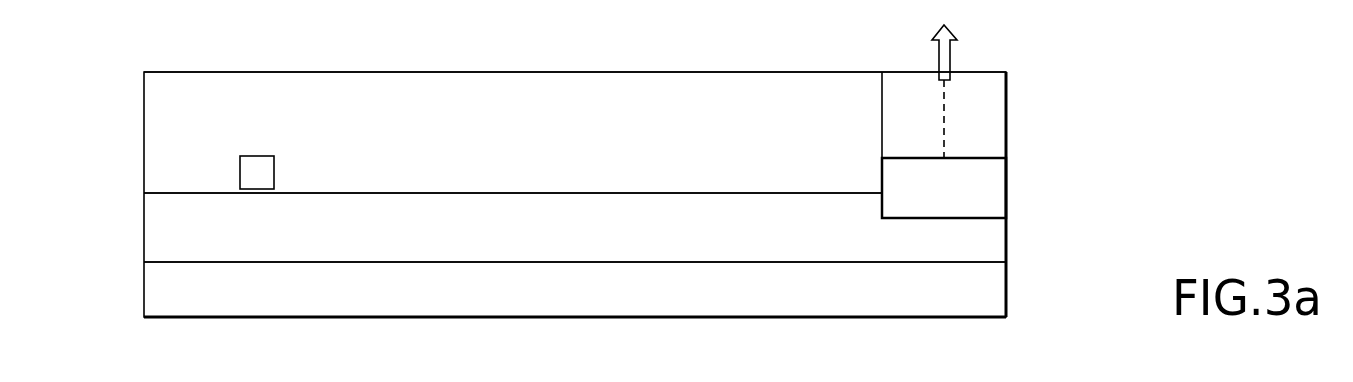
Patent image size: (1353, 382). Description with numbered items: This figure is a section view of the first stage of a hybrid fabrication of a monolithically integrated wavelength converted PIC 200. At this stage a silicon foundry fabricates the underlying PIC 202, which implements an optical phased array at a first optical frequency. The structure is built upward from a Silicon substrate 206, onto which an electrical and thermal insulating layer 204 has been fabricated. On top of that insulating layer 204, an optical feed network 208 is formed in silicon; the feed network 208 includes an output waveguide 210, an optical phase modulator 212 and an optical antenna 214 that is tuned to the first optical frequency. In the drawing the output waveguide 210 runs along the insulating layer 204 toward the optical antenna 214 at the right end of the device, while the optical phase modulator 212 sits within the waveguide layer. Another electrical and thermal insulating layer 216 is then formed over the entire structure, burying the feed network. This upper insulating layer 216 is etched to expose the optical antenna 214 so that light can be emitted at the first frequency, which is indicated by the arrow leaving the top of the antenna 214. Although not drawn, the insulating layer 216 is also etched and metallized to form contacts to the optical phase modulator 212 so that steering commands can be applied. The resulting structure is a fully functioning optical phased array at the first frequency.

The monolithically integrated wavelength converted PIC 200 is at (1222, 128).
The underlying PIC 202 is at (1008, 118).
The electrical and thermal insulating layer 204 is at (787, 242).
The Silicon substrate 206 is at (993, 290).
The optical feed network 208 is at (198, 217).
The output waveguide 210 is at (597, 194).
The optical phase modulator 212 is at (262, 156).
The optical antenna 214 is at (1008, 188).
The electrical and thermal insulating layer 216 is at (787, 125).